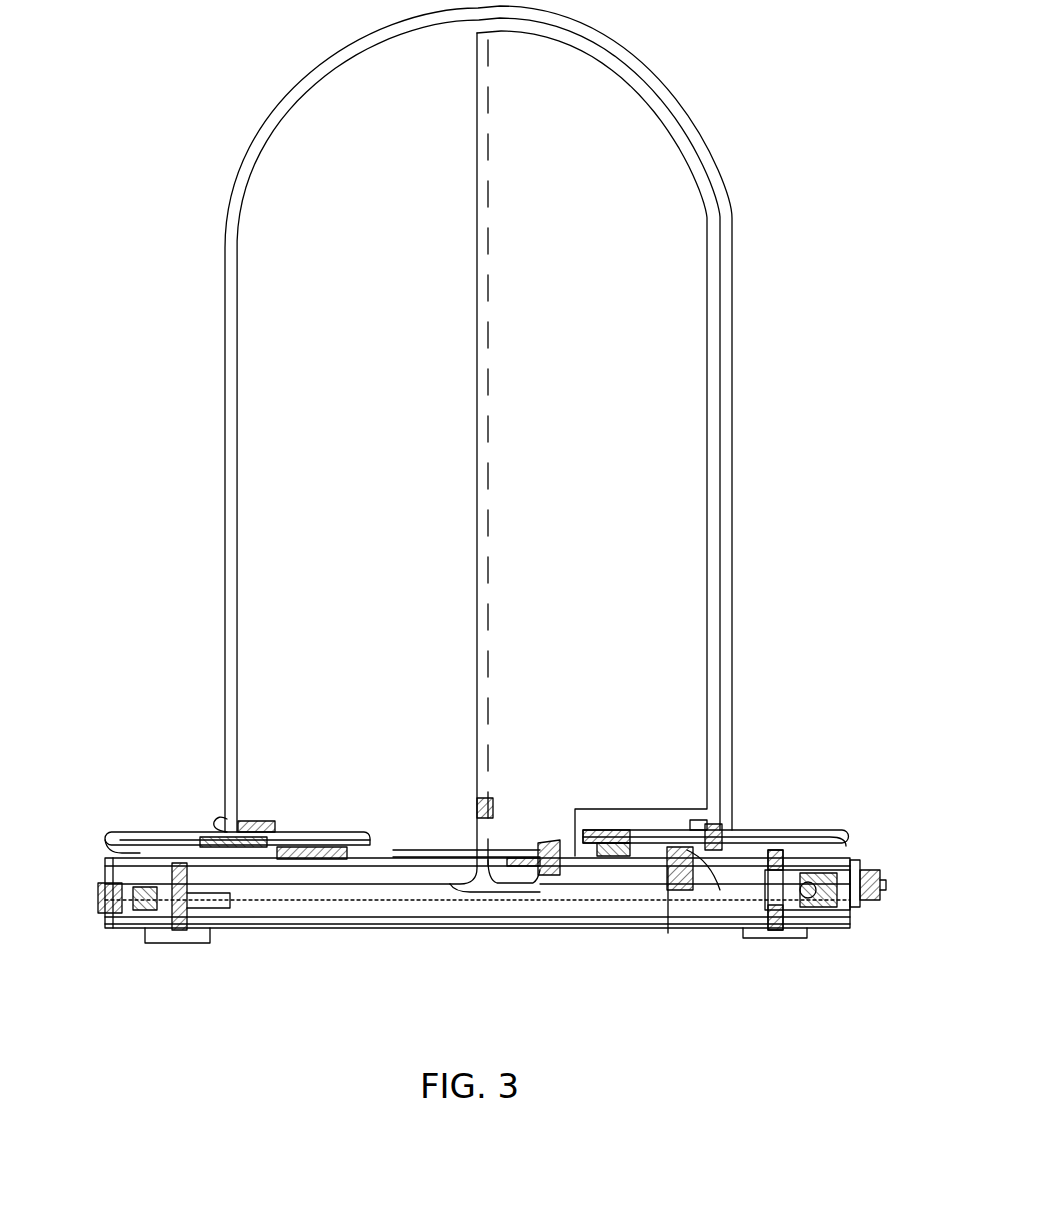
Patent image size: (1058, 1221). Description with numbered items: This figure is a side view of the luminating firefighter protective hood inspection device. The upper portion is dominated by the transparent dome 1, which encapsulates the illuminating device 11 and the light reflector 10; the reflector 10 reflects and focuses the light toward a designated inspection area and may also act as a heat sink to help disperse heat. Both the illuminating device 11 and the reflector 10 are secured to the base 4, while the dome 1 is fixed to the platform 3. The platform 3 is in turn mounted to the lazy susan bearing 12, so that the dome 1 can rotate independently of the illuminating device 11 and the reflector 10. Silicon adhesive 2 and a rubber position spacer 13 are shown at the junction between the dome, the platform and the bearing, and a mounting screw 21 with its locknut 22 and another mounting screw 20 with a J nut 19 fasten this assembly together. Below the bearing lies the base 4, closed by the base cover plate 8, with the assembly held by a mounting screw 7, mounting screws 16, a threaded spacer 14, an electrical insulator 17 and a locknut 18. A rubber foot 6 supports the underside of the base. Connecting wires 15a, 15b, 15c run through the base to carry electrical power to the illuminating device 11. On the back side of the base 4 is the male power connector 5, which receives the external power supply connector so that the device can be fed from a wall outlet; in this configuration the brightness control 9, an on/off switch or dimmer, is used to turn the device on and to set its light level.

The transparent dome 1 is at (727, 190).
The silicon adhesive 2 is at (740, 820).
The platform 3 is at (793, 823).
The base 4 is at (853, 857).
The male power connector 5 is at (103, 893).
The rubber foot 6 is at (813, 937).
The mounting screw 7 is at (183, 850).
The base cover plate 8 is at (613, 927).
The brightness control 9 is at (903, 873).
The light reflector 10 is at (530, 275).
The illuminating device 11 is at (488, 377).
The lazy susan bearing 12 is at (357, 830).
The rubber position spacer 13 is at (277, 812).
The threaded spacer 14 is at (220, 893).
The connecting wires 15a is at (390, 887).
The connecting wires 15b is at (417, 897).
The connecting wires 15c is at (483, 887).
The mounting screws 16 is at (547, 840).
The electrical insulator 17 is at (133, 927).
The locknut 18 is at (540, 893).
The J nut 19 is at (720, 890).
The mounting screw 20 is at (667, 927).
The mounting screw 21 is at (253, 823).
The locknut 22 is at (227, 850).